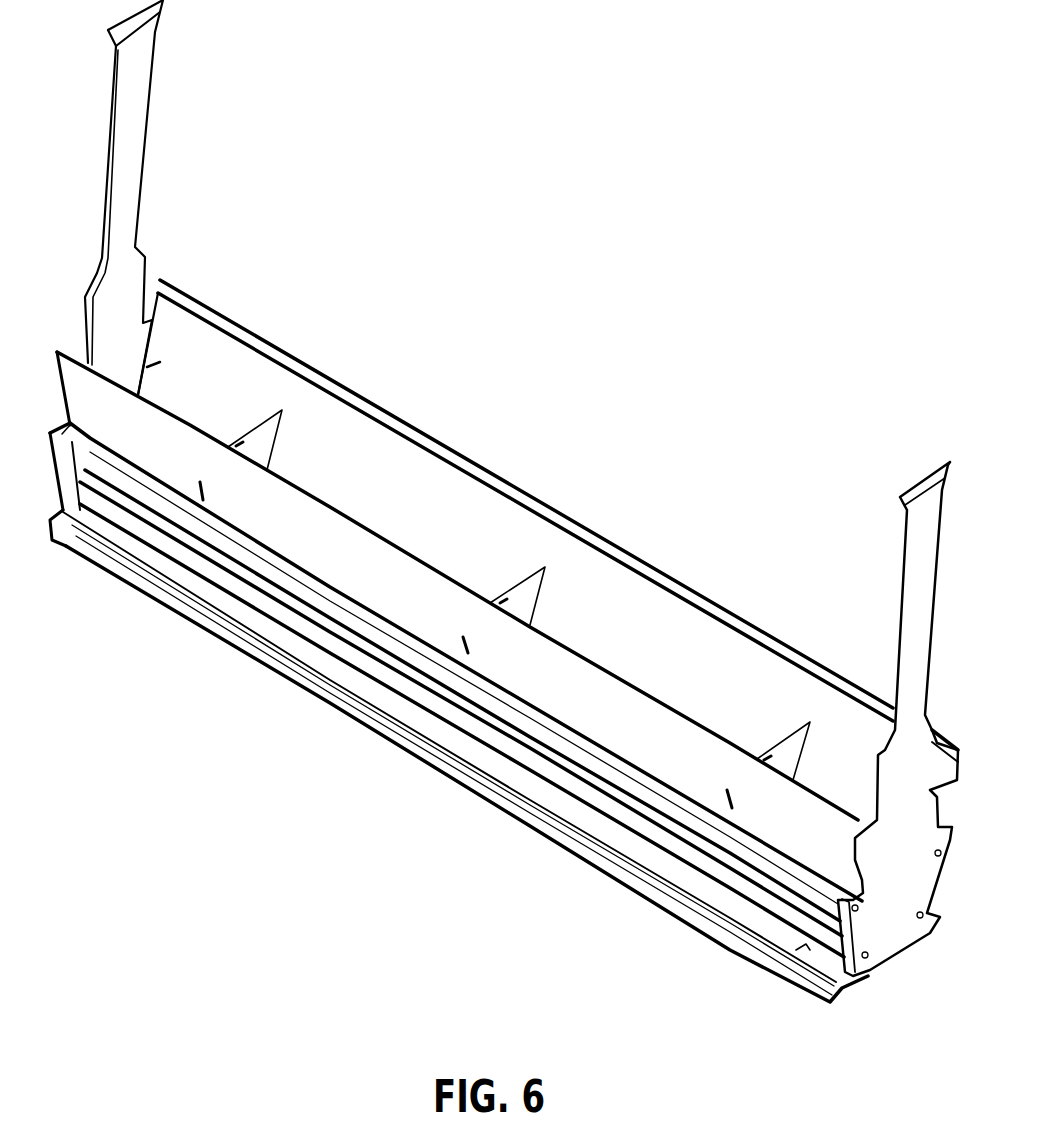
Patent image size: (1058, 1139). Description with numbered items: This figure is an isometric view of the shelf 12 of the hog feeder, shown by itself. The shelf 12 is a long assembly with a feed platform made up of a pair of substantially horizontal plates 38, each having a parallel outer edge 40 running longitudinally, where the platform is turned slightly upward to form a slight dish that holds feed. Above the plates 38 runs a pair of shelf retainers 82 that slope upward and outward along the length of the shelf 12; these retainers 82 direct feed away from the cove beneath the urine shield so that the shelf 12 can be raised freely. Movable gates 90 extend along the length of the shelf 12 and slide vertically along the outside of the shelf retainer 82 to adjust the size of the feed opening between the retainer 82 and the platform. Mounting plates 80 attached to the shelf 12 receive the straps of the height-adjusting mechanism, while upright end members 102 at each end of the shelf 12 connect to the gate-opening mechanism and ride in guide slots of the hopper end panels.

The shelf 12 is at (465, 750).
The horizontal plates 38 is at (803, 950).
The outer edges 40 is at (750, 940).
The mounting plates 80 is at (520, 582).
The shelf retainer 82 is at (66, 388).
The gate 90 is at (600, 833).
The end members 102 is at (898, 598).